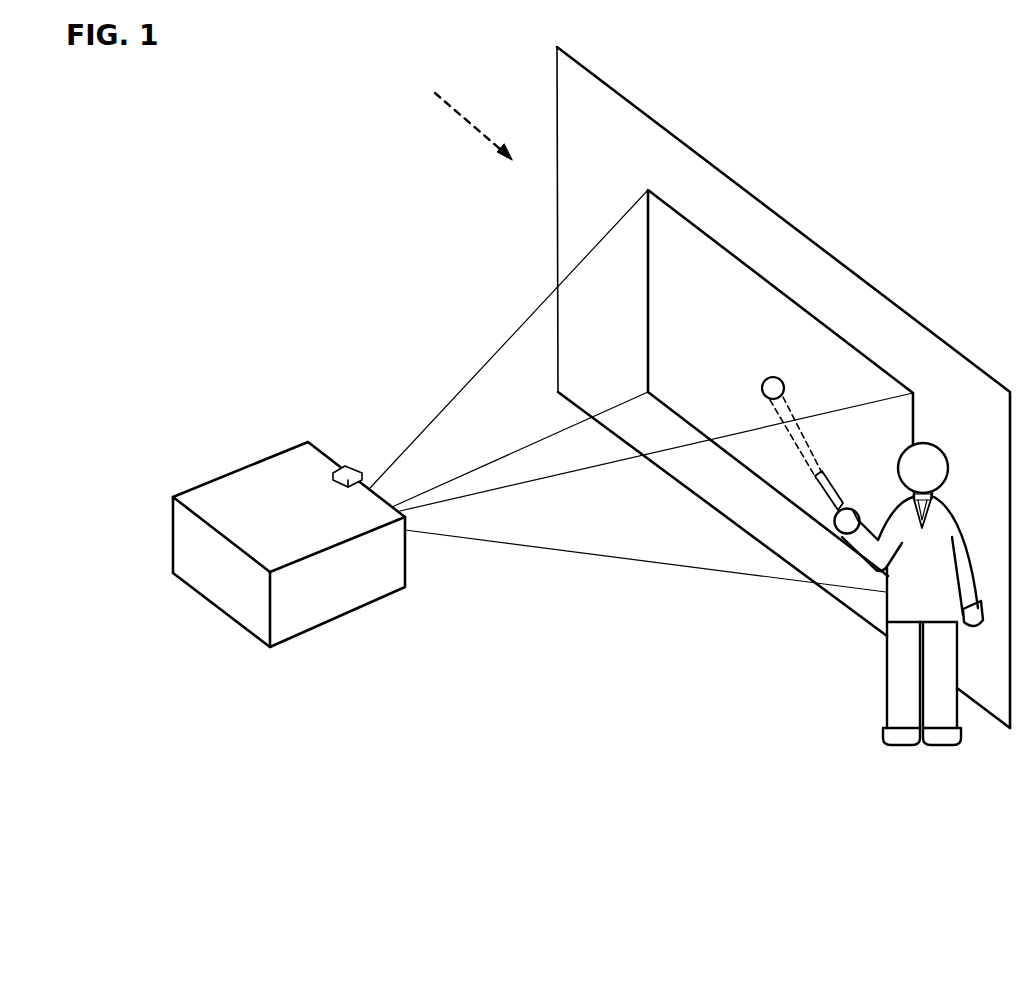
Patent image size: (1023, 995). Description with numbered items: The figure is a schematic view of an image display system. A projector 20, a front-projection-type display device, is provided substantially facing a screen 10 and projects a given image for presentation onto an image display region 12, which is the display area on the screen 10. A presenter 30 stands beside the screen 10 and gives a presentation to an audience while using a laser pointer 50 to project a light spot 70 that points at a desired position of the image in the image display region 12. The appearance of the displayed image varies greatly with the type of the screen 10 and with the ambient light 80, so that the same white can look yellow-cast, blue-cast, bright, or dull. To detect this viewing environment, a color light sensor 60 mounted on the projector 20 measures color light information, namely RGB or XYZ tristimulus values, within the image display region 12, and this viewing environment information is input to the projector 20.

The screen 10 is at (815, 243).
The image display region 12 is at (815, 316).
The projector 20 is at (388, 580).
The presenter 30 is at (926, 443).
The laser pointer 50 is at (838, 498).
The color light sensor 60 is at (351, 467).
The light spot 70 is at (785, 382).
The ambient light 80 is at (453, 106).